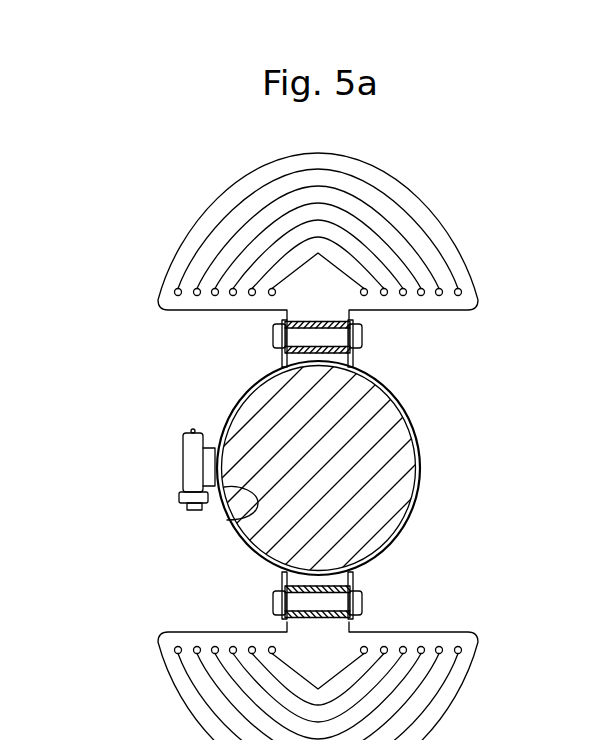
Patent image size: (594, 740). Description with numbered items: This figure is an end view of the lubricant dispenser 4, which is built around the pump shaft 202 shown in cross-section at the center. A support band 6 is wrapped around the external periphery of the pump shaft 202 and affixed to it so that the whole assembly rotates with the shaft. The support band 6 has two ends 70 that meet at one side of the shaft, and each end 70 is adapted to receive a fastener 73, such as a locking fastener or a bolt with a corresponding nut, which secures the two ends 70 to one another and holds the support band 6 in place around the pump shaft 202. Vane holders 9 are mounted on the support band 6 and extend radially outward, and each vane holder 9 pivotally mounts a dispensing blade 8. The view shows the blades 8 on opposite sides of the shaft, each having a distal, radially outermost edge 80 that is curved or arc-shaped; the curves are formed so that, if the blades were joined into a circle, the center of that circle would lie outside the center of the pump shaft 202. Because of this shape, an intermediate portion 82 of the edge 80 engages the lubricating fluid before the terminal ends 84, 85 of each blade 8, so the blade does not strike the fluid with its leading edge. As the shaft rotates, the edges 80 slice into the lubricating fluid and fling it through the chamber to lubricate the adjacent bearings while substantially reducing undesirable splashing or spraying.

The lubricant dispenser 4 is at (340, 236).
The dispensing blade 8 is at (474, 300).
The vane holder 9 is at (362, 328).
The pump shaft 202 is at (383, 405).
The support band 6 is at (424, 456).
The fastener 73 is at (183, 470).
The band end 70 is at (218, 512).
The terminal end of blade 84 is at (317, 656).
The terminal end of blade 85 is at (318, 681).
The intermediate portion of blade edge 82 is at (318, 694).
The distal edge of blade 80 is at (453, 695).